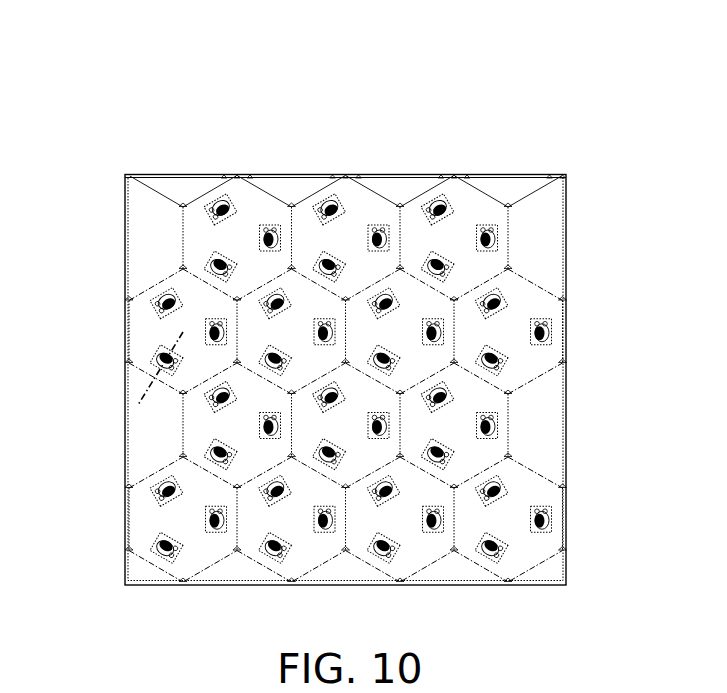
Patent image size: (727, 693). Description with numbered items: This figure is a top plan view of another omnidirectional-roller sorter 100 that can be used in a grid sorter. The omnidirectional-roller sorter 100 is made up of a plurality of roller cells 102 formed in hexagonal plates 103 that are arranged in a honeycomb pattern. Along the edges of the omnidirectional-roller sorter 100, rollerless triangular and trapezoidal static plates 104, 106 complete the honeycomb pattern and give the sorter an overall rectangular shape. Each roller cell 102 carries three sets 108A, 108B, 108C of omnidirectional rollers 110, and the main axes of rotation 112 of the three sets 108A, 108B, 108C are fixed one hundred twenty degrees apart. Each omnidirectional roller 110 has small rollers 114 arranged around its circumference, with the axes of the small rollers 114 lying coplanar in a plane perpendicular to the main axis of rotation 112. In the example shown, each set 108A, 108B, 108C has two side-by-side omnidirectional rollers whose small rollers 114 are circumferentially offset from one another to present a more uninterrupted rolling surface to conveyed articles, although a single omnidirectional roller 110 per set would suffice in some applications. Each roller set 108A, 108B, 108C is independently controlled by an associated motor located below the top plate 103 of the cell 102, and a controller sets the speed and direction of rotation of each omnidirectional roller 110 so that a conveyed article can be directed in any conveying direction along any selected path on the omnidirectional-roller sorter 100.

The omnidirectional-roller sorter 100 is at (135, 76).
The roller cell 102 is at (550, 357).
The hexagonal plate 103 is at (477, 203).
The triangular static plate 104 is at (287, 189).
The trapezoidal static plate 106 is at (540, 243).
The first set of omnidirectional rollers 108A is at (163, 487).
The second set of omnidirectional rollers 108B is at (152, 548).
The third set of omnidirectional rollers 108C is at (220, 529).
The omnidirectional roller 110 is at (157, 357).
The main axis of rotation 112 is at (147, 391).
The small roller 114 is at (551, 520).